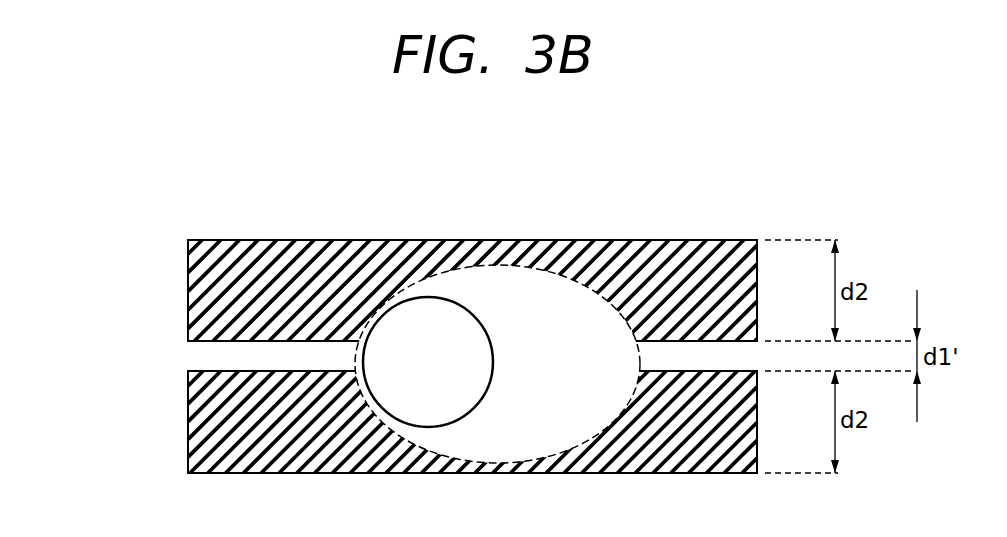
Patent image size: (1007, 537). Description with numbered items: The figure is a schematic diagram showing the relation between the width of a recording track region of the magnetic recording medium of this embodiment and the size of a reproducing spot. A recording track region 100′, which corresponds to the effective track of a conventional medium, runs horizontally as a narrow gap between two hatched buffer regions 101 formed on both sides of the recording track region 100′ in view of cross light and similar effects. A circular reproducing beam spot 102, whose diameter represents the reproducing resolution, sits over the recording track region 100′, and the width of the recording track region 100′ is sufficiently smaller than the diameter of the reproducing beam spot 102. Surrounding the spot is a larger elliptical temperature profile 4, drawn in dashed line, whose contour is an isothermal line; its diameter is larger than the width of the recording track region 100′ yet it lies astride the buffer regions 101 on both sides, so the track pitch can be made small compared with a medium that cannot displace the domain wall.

The buffer regions 101 is at (165, 241).
The recording track region 100′ is at (208, 357).
The temperature profile 4 is at (556, 266).
The reproducing beam spot 102 is at (430, 297).